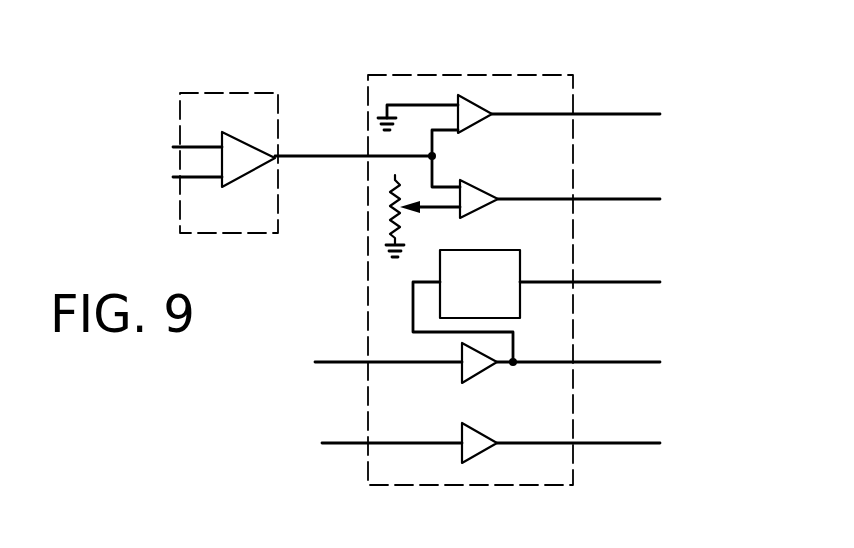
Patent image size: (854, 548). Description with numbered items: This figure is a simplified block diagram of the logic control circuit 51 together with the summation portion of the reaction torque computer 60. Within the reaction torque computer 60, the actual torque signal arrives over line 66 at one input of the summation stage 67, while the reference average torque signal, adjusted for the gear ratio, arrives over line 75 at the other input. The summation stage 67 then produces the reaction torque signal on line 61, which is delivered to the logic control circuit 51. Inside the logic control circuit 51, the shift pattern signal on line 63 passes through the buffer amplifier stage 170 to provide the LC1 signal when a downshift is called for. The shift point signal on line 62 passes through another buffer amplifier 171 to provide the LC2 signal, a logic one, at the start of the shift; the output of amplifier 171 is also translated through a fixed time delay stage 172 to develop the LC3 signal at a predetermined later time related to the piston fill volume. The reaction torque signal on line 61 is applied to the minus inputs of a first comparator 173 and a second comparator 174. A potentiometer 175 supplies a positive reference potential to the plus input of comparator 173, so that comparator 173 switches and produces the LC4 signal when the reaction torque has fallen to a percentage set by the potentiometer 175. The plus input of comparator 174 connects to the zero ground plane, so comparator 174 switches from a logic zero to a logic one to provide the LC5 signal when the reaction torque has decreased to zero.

The logic control circuit 51 is at (470, 254).
The reaction torque computer 60 is at (235, 82).
The line 61 is at (349, 155).
The line 62 is at (359, 361).
The line 63 is at (359, 441).
The line 66 is at (190, 178).
The summation stage 67 is at (250, 180).
The line 75 is at (197, 147).
The buffer amplifier stage 170 is at (480, 449).
The buffer amplifier 171 is at (478, 370).
The fixed time delay stage 172 is at (513, 308).
The first comparator 173 is at (478, 204).
The second comparator 174 is at (474, 119).
The potentiometer 175 is at (396, 200).